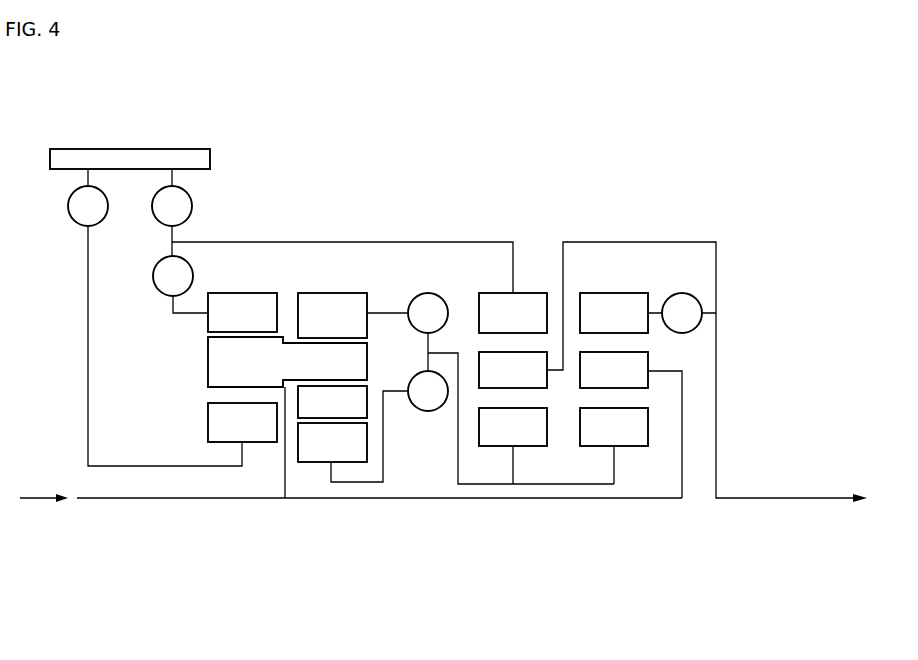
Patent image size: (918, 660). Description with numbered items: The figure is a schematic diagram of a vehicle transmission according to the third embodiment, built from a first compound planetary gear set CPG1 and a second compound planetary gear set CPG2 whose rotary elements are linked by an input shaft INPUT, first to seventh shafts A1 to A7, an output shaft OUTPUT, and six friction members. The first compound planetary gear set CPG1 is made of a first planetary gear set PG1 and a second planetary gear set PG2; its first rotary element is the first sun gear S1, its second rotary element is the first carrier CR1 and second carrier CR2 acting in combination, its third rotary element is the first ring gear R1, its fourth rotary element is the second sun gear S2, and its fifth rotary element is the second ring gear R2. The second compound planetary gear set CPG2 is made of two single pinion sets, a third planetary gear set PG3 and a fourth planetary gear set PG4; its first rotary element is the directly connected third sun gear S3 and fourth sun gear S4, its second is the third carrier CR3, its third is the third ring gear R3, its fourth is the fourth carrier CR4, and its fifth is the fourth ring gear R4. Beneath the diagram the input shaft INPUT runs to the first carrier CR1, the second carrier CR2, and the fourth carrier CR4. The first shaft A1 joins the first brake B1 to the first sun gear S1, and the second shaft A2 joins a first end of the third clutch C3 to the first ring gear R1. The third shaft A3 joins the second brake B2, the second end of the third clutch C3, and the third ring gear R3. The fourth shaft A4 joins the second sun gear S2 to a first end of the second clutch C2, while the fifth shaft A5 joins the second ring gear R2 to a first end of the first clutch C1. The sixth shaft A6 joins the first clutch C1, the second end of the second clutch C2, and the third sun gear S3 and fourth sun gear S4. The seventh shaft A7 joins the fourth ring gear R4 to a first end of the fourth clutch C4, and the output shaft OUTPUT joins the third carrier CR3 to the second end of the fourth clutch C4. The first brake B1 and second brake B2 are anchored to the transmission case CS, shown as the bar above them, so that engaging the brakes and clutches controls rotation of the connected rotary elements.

The transmission case CS is at (132, 149).
The first brake B1 is at (88, 197).
The second brake B2 is at (172, 197).
The first clutch C1 is at (428, 332).
The second clutch C2 is at (428, 391).
The third clutch C3 is at (173, 261).
The fourth clutch C4 is at (682, 313).
The first shaft A1 is at (88, 375).
The second shaft A2 is at (185, 314).
The third shaft A3 is at (311, 242).
The fourth shaft A4 is at (383, 481).
The fifth shaft A5 is at (386, 312).
The sixth shaft A6 is at (484, 484).
The seventh shaft A7 is at (656, 312).
The first planetary gear set PG1 is at (287, 432).
The second planetary gear set PG2 is at (332, 432).
The third planetary gear set PG3 is at (522, 432).
The fourth planetary gear set PG4 is at (616, 432).
The first compound planetary gear set CPG1 is at (287, 454).
The second compound planetary gear set CPG2 is at (566, 457).
The first ring gear R1 is at (242, 312).
The second ring gear R2 is at (332, 315).
The third ring gear R3 is at (513, 313).
The fourth ring gear R4 is at (614, 313).
The first carrier CR1 is at (287, 362).
The second carrier CR2 is at (332, 385).
The third carrier CR3 is at (513, 370).
The fourth carrier CR4 is at (614, 370).
The first sun gear S1 is at (242, 422).
The second sun gear S2 is at (332, 442).
The third sun gear S3 is at (513, 427).
The fourth sun gear S4 is at (614, 427).
The input shaft INPUT is at (170, 498).
The output shaft OUTPUT is at (716, 375).